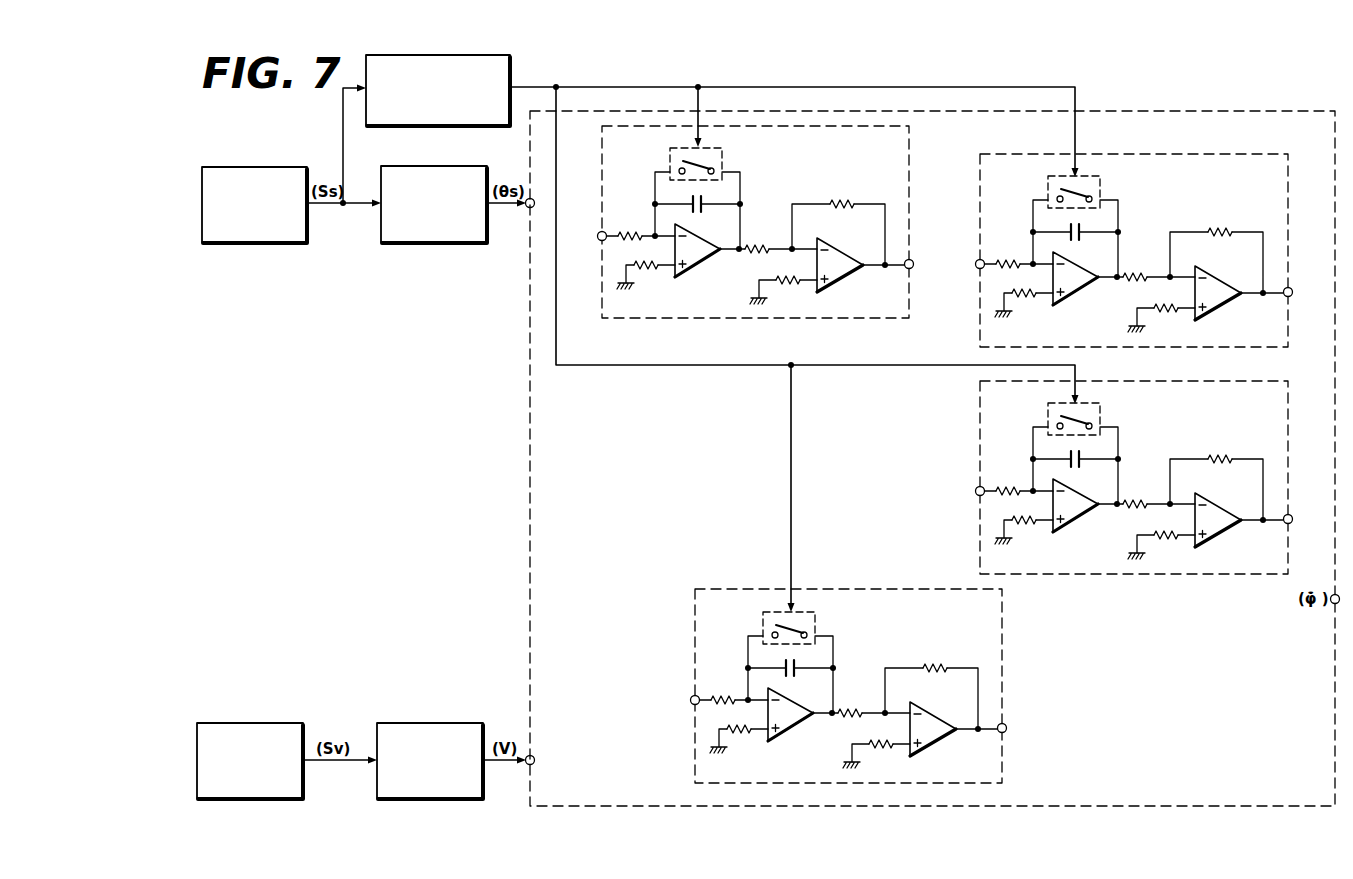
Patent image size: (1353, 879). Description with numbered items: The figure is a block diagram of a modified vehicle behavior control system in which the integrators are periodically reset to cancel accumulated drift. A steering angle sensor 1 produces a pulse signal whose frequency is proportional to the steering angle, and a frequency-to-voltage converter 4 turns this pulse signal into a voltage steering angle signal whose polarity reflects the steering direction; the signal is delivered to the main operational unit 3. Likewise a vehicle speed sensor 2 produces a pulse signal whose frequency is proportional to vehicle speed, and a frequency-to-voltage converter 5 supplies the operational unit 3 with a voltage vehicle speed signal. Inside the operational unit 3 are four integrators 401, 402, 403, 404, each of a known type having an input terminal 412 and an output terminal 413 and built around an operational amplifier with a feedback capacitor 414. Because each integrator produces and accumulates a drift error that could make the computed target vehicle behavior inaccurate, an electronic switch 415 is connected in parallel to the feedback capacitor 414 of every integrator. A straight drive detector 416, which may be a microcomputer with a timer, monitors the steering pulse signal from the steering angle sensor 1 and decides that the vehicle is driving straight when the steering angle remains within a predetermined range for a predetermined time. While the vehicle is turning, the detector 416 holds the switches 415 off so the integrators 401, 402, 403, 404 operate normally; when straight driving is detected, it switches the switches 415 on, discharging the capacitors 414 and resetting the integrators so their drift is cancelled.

The steering angle sensor 1 is at (287, 243).
The vehicle speed sensor 2 is at (287, 723).
The main operational unit 3 is at (1250, 112).
The frequency-to-voltage converter 4 is at (462, 243).
The frequency-to-voltage converter 5 is at (463, 723).
The integrator 401 is at (822, 318).
The integrator 402 is at (1193, 347).
The integrator 403 is at (1205, 574).
The integrator 404 is at (1002, 620).
The input terminal 412 is at (691, 706).
The output terminal 413 is at (1012, 746).
The feedback capacitor 414 is at (835, 690).
The electronic switch 415 is at (846, 622).
The straight drive detector 416 is at (510, 70).